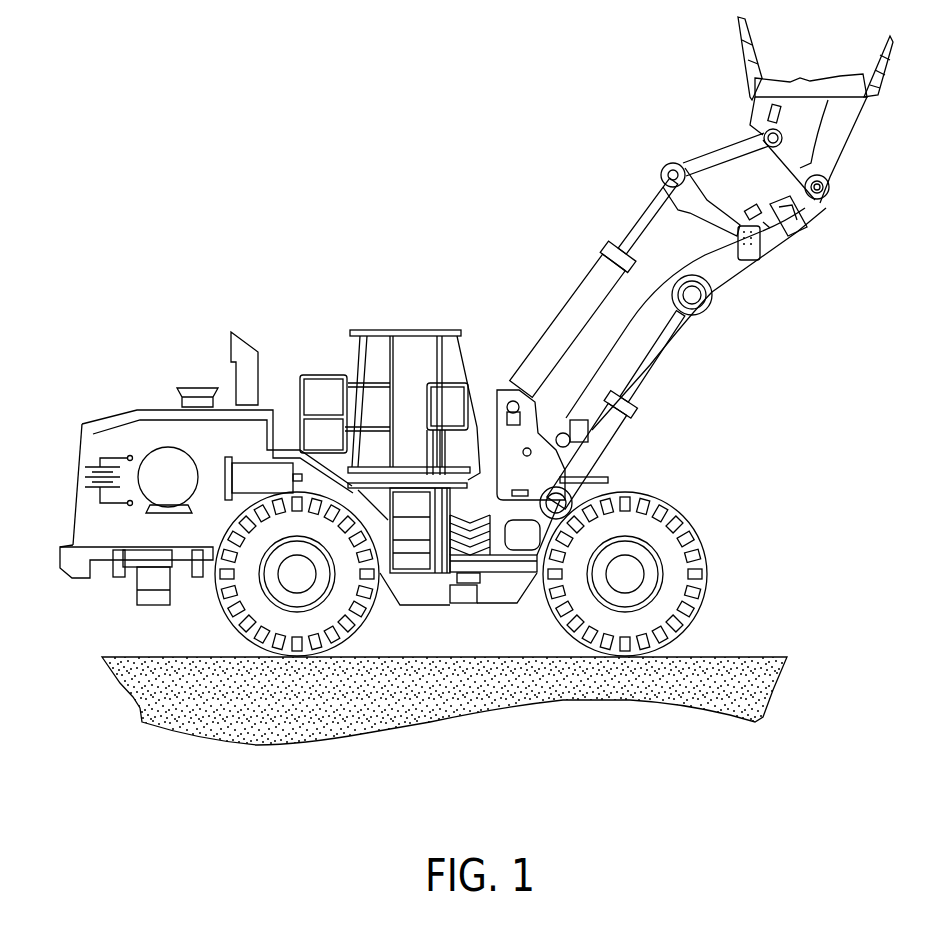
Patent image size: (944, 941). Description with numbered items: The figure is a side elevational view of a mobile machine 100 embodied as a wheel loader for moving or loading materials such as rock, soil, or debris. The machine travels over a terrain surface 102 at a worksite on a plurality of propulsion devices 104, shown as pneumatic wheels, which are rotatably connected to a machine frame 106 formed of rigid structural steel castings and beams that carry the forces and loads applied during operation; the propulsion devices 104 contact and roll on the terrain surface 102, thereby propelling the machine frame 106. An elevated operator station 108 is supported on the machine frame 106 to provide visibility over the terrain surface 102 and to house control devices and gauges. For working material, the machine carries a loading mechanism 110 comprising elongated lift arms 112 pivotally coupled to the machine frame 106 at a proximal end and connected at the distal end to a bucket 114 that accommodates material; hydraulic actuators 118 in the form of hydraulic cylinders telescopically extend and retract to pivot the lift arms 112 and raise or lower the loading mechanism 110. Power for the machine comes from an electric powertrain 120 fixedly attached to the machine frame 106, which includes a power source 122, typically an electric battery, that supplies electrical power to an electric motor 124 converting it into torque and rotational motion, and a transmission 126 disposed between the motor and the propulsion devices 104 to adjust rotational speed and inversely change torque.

The mobile machine 100 is at (180, 199).
The terrain surface 102 is at (797, 635).
The propulsion devices 104 is at (690, 626).
The machine frame 106 is at (460, 605).
The operator station 108 is at (408, 329).
The loading mechanism 110 is at (618, 163).
The lift arms 112 is at (733, 283).
The bucket 114 is at (788, 87).
The hydraulic actuators 118 is at (568, 308).
The electric powertrain 120 is at (259, 452).
The power source 122 is at (87, 443).
The electric motor 124 is at (148, 498).
The transmission 126 is at (277, 475).